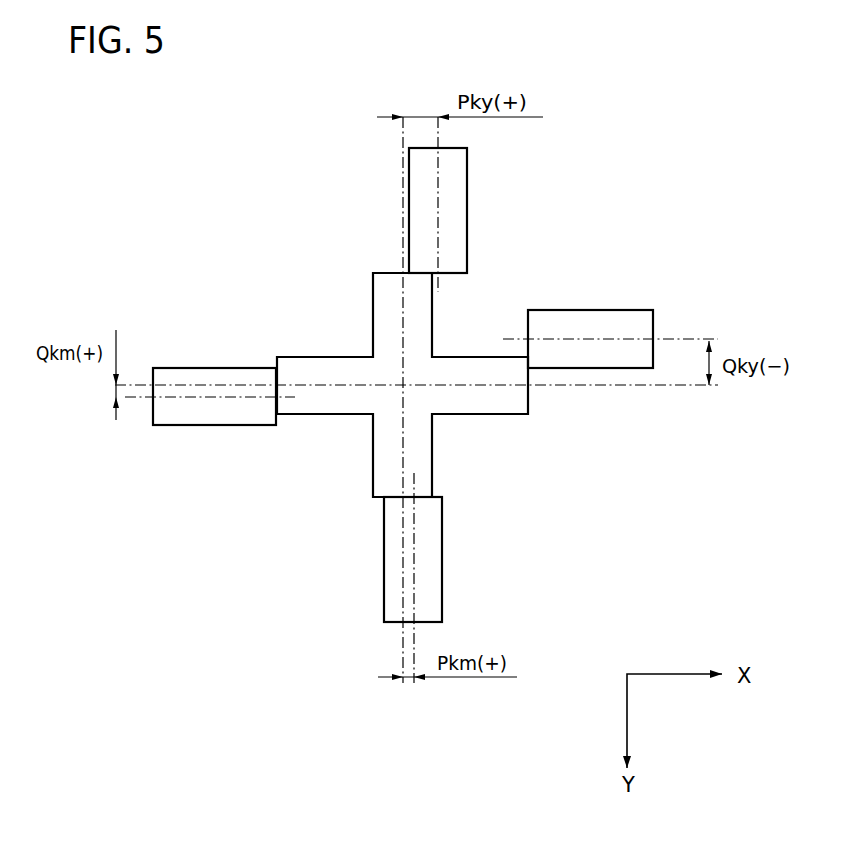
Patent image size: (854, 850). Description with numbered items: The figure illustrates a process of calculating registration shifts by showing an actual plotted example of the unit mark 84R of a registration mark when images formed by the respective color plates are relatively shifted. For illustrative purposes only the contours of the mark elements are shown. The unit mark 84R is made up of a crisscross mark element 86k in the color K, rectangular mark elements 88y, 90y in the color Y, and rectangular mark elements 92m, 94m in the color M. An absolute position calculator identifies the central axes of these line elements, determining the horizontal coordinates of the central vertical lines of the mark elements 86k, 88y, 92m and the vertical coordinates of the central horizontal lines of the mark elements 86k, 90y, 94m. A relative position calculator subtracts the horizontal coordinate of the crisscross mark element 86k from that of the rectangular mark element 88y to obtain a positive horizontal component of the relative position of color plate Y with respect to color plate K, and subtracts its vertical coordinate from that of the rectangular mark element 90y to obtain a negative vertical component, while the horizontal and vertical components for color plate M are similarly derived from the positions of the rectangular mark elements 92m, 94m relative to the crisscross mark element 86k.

The unit mark 84R is at (283, 191).
The crisscross mark element 86k is at (432, 322).
The rectangular mark element 88y is at (467, 197).
The rectangular mark element 90y is at (570, 310).
The rectangular mark element 92m is at (443, 558).
The rectangular mark element 94m is at (180, 368).